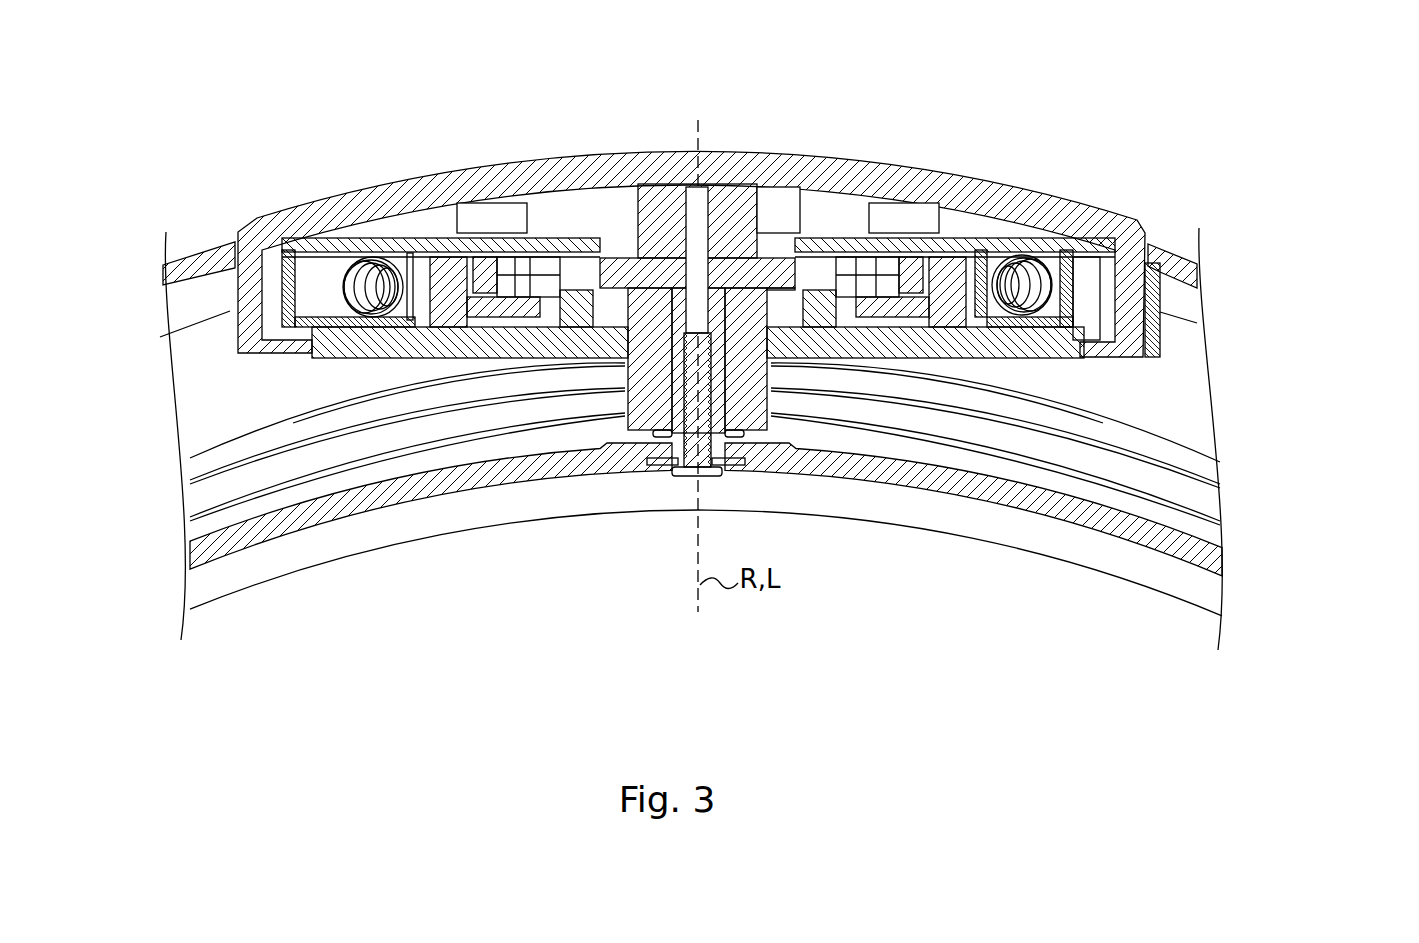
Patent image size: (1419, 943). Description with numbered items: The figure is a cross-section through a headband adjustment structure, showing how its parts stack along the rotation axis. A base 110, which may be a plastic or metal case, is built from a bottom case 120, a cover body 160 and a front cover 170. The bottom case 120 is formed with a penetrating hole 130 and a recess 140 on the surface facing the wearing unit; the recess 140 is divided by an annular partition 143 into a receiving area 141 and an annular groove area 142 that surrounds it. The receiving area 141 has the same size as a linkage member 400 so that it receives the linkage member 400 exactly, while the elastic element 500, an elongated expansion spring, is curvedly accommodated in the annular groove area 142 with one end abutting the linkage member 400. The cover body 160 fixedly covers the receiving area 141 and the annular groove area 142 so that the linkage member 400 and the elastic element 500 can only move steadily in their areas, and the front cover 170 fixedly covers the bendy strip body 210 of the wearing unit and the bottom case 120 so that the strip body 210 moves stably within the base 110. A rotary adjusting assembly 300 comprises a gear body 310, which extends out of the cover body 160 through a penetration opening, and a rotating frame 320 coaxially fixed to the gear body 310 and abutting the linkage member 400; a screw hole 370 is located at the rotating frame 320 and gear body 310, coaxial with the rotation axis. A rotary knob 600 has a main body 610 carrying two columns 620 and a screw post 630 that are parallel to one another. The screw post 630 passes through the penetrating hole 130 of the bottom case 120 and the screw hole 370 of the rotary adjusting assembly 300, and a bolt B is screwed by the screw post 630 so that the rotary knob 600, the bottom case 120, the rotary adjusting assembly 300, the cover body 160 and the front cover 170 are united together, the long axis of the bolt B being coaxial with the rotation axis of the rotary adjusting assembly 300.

The base 110 is at (1320, 265).
The bottom case 120 is at (1185, 258).
The penetrating hole 130 is at (515, 236).
The recess 140 is at (455, 100).
The receiving area 141 is at (432, 253).
The annular groove area 142 is at (341, 251).
The annular partition 143 is at (409, 270).
The cover body 160 is at (1033, 358).
The front cover 170 is at (1220, 568).
The strip body 210 is at (183, 465).
The rotary adjusting assembly 300 is at (517, 85).
The gear body 310 is at (620, 263).
The rotating frame 320 is at (642, 370).
The screw hole 370 is at (666, 376).
The linkage member 400 is at (953, 256).
The elastic element 500 is at (1021, 256).
The rotary knob 600 is at (913, 80).
The main body 610 is at (861, 263).
The columns 620 is at (764, 250).
The screw post 630 is at (718, 280).
The bolt B is at (695, 480).